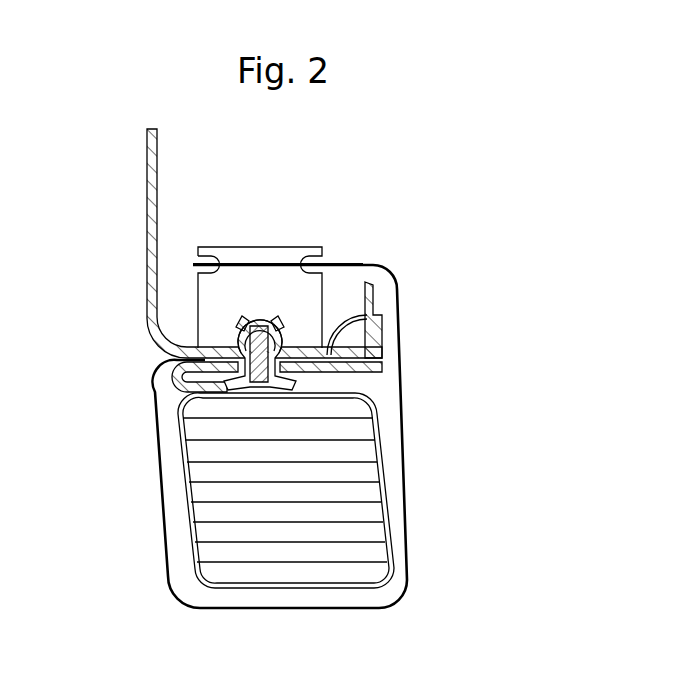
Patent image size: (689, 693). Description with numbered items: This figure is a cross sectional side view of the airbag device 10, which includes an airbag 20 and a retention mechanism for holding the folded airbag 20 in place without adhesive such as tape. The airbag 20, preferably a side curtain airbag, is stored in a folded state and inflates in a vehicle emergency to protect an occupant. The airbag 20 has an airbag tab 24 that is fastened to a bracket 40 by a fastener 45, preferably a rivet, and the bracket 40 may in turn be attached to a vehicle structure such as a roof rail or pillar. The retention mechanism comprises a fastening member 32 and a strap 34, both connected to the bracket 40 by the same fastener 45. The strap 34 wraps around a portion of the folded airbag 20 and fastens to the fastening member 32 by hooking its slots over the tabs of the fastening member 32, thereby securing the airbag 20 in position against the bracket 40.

The airbag device 10 is at (470, 262).
The airbag 20 is at (182, 506).
The airbag tab 24 is at (156, 381).
The fastening member 32 is at (237, 240).
The strap 34 is at (400, 373).
The bracket 40 is at (147, 268).
The fastener 45 is at (277, 327).